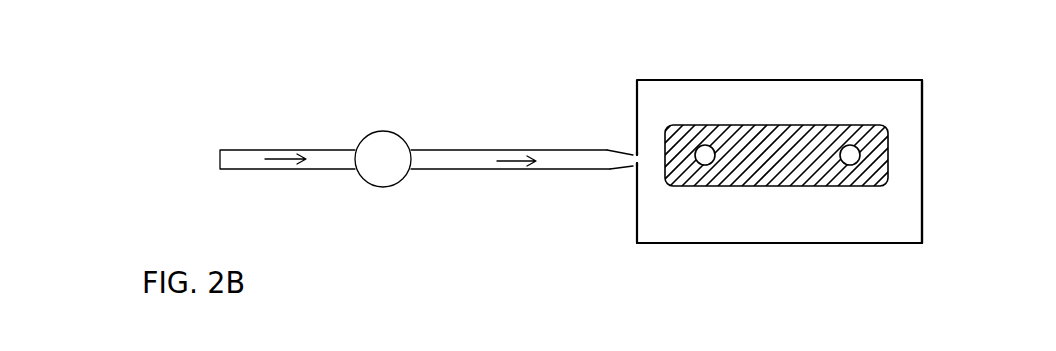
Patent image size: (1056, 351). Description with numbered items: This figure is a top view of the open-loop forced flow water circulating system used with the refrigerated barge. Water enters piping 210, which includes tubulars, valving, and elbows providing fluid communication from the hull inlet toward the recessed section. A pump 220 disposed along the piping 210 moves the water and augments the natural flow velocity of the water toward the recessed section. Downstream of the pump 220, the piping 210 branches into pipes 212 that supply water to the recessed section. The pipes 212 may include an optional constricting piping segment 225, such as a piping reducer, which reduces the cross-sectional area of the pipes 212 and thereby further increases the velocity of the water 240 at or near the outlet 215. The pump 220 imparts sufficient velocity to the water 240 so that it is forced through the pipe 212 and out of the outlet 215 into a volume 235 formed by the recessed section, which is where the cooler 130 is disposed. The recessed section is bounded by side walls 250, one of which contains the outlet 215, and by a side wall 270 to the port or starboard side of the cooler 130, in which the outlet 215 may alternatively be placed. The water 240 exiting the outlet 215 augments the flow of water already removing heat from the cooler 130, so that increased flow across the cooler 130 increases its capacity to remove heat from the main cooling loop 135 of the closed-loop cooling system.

The piping 210 is at (275, 149).
The pump 220 is at (375, 132).
The pipes 212 is at (512, 170).
The water 240 is at (525, 157).
The constricting piping segment 225 is at (622, 155).
The side wall 270 is at (767, 79).
The outlet 215 is at (643, 162).
The volume 235 is at (907, 117).
The side walls 250 is at (925, 225).
The cooler 130 is at (780, 187).
The main cooling loop 135 is at (868, 157).